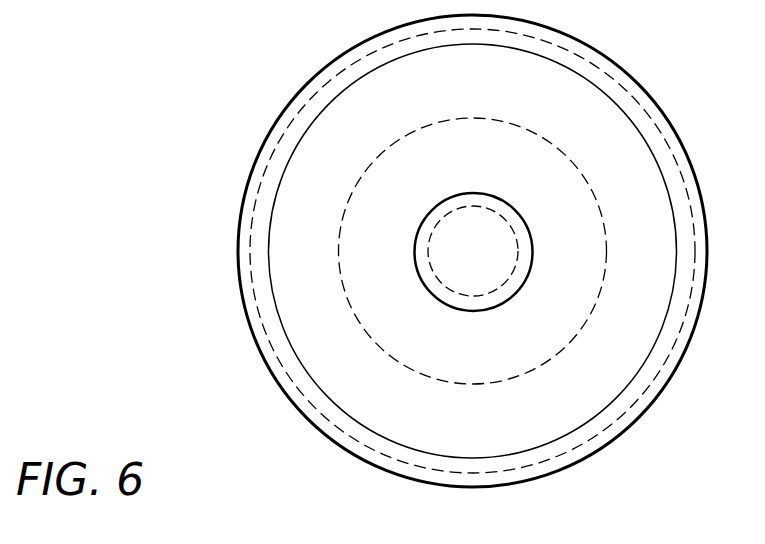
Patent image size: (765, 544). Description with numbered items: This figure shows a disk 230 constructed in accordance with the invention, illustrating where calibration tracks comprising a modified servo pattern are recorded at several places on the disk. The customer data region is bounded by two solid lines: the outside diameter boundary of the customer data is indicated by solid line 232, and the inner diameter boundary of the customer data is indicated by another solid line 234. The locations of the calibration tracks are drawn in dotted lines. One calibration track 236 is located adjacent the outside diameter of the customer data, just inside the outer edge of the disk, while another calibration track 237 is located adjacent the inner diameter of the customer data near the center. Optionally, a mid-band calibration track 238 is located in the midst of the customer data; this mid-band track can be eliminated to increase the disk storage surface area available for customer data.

The disk 230 is at (265, 142).
The outside diameter boundary of the customer data 232 is at (298, 363).
The inner diameter boundary of the customer data 234 is at (470, 193).
The calibration track 236 is at (623, 79).
The calibration track 237 is at (480, 297).
The mid-band calibration track 238 is at (470, 118).